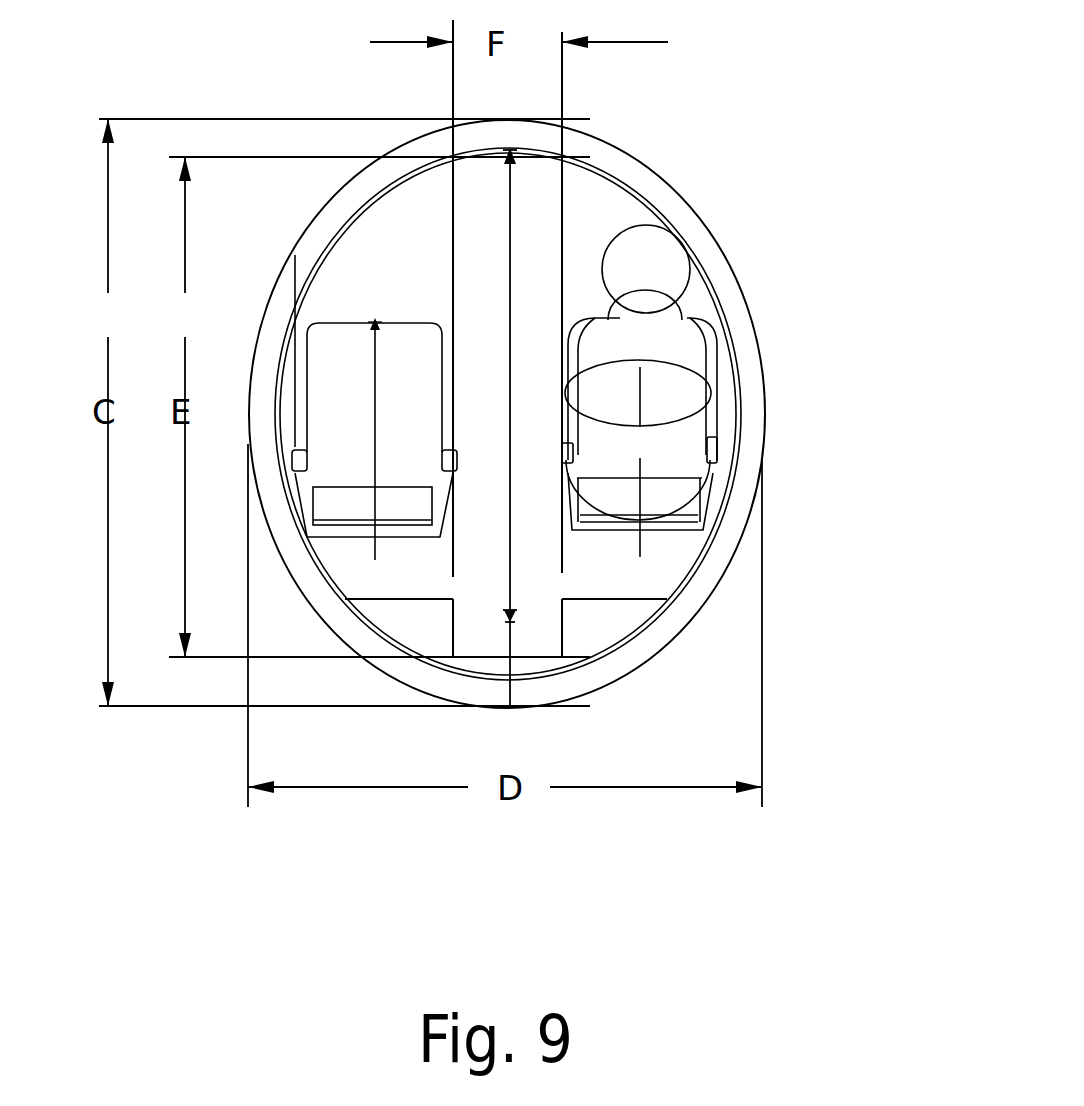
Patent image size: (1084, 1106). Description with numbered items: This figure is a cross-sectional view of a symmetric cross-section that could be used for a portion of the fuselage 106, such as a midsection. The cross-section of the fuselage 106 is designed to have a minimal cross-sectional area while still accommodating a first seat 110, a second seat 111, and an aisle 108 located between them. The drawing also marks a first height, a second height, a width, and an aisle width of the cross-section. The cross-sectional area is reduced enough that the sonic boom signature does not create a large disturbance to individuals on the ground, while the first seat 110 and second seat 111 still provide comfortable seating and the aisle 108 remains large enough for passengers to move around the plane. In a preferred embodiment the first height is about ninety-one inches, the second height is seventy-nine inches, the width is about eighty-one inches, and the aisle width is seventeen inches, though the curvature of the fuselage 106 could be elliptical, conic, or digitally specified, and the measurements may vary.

The fuselage 106 is at (725, 282).
The aisle 108 is at (463, 642).
The first seat 110 is at (687, 427).
The second seat 111 is at (410, 348).